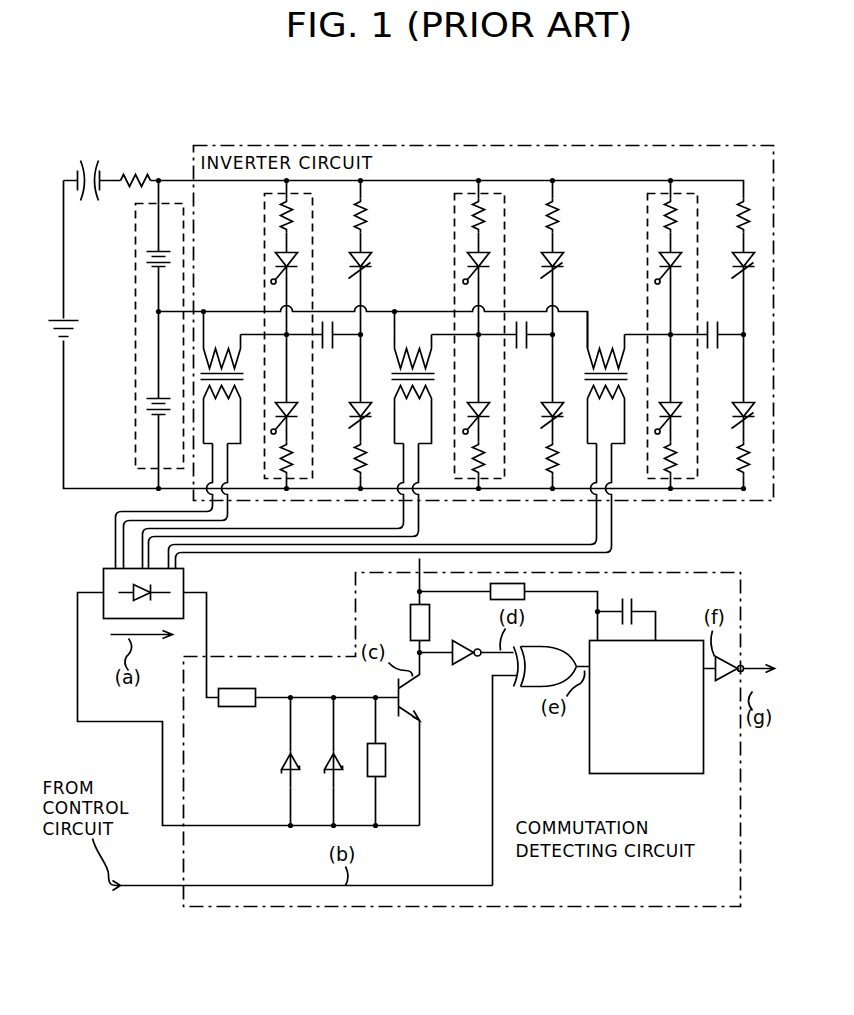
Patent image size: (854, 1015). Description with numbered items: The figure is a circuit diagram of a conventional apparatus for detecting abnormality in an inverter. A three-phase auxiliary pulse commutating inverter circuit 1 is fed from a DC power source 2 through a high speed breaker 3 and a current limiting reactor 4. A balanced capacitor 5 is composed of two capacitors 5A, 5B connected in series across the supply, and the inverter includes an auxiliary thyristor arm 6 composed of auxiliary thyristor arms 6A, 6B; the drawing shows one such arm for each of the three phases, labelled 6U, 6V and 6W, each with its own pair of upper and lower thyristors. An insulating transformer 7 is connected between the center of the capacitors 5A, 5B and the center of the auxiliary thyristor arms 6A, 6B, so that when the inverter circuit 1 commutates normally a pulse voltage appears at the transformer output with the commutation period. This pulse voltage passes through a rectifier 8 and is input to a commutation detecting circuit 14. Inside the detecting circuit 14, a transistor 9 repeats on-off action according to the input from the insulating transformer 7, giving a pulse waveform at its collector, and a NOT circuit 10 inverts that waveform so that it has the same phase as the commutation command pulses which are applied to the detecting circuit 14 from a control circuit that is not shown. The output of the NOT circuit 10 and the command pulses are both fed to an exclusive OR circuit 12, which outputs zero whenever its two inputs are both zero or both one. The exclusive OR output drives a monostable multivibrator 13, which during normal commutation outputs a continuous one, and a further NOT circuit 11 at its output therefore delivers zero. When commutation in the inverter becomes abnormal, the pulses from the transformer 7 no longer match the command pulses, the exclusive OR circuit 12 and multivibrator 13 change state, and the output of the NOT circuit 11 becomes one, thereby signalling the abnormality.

The three-phase auxiliary pulse commutating inverter circuit 1 is at (608, 148).
The DC power source 2 is at (66, 334).
The high speed breaker 3 is at (88, 170).
The current limiting reactor 4 is at (140, 170).
The balanced capacitor 5 is at (134, 355).
The capacitor 5A is at (157, 258).
The capacitor 5B is at (157, 411).
The auxiliary thyristor arm 6 is at (280, 335).
The U-phase unit 6U is at (264, 232).
The V-phase unit 6V is at (454, 232).
The W-phase unit 6W is at (647, 232).
The auxiliary thyristor arm 6A is at (276, 266).
The auxiliary thyristor arm 6B is at (290, 413).
The insulating transformer 7 is at (222, 370).
The rectifier 8 is at (185, 583).
The transistor 9 is at (404, 700).
The NOT circuit 10 is at (462, 645).
The NOT circuit 11 is at (728, 680).
The exclusive OR circuit 12 is at (555, 648).
The monostable multivibrator 13 is at (589, 755).
The commutation detecting circuit 14 is at (600, 908).